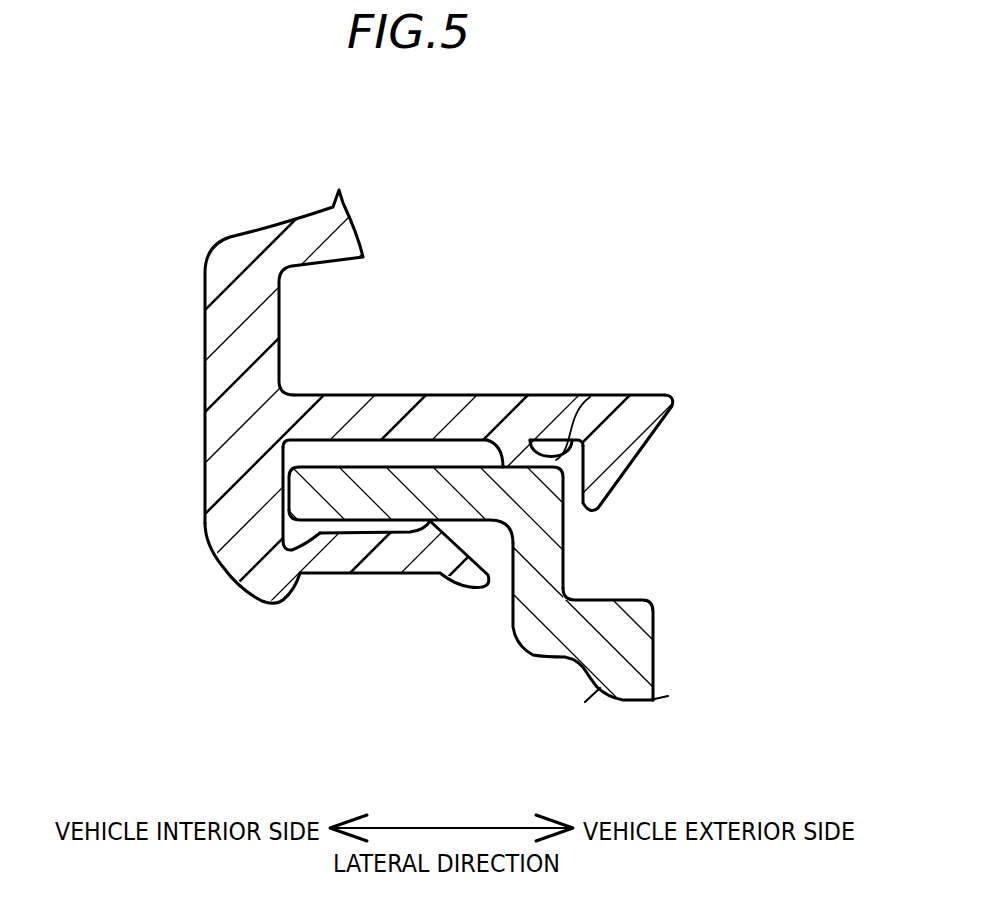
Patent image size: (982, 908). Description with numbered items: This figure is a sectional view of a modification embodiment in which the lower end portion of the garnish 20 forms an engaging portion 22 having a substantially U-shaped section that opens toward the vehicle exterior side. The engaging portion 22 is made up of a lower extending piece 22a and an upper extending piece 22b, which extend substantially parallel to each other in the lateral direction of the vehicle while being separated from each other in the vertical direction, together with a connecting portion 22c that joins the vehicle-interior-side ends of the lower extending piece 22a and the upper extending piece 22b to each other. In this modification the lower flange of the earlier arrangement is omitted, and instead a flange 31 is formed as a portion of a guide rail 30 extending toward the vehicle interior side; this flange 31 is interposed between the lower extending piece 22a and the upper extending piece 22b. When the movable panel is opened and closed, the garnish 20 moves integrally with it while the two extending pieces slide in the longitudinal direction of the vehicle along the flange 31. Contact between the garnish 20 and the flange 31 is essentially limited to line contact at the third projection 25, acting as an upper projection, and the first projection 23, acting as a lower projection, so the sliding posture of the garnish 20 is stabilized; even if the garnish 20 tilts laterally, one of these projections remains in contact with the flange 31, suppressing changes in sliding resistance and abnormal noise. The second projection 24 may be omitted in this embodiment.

The garnish 20 is at (214, 239).
The engaging portion 22 is at (202, 481).
The lower extending piece 22a is at (380, 574).
The upper extending piece 22b is at (550, 395).
The connecting portion 22c is at (202, 426).
The first projection 23 is at (430, 527).
The second projection 24 is at (254, 593).
The third projection 25 is at (597, 391).
The guide rail 30 is at (657, 597).
The flange 31 is at (357, 470).